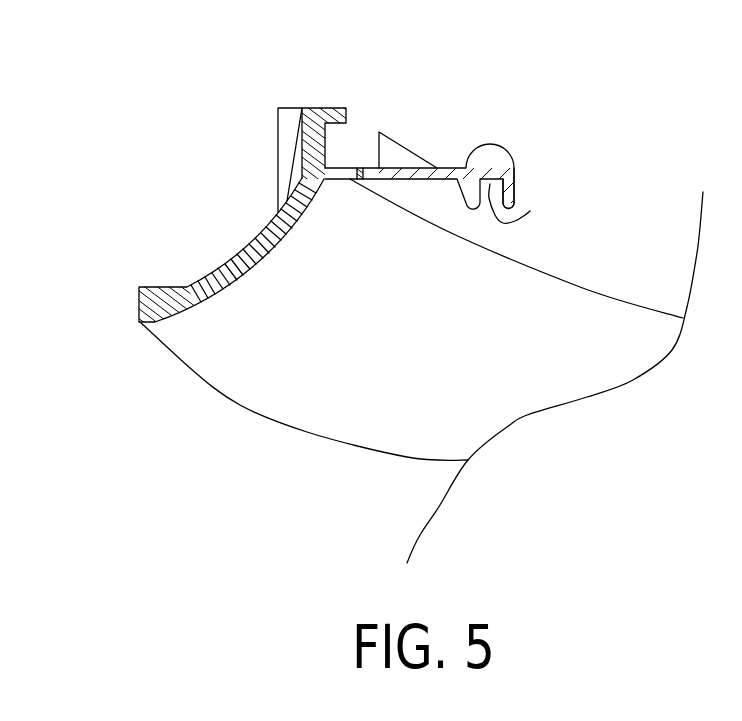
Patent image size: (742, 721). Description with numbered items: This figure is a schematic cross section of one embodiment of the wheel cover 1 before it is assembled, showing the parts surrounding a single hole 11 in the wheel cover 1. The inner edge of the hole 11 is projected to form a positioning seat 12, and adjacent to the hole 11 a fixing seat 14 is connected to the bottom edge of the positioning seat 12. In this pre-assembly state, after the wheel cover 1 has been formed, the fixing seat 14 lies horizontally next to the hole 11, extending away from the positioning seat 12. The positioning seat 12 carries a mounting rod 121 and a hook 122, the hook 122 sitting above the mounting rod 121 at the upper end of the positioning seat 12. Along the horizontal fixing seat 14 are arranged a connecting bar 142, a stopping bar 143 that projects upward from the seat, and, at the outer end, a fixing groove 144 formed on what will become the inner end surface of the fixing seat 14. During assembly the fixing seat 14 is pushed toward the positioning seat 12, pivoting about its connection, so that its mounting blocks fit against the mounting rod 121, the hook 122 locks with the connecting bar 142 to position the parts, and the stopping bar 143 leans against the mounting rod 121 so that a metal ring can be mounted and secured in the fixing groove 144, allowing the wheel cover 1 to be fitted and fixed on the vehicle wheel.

The wheel cover 1 is at (322, 405).
The hole 11 is at (588, 352).
The positioning seat 12 is at (285, 170).
The mounting rod 121 is at (287, 128).
The hook 122 is at (322, 118).
The fixing seat 14 is at (452, 173).
The connecting bar 142 is at (360, 181).
The stopping bar 143 is at (390, 153).
The fixing groove 144 is at (530, 211).